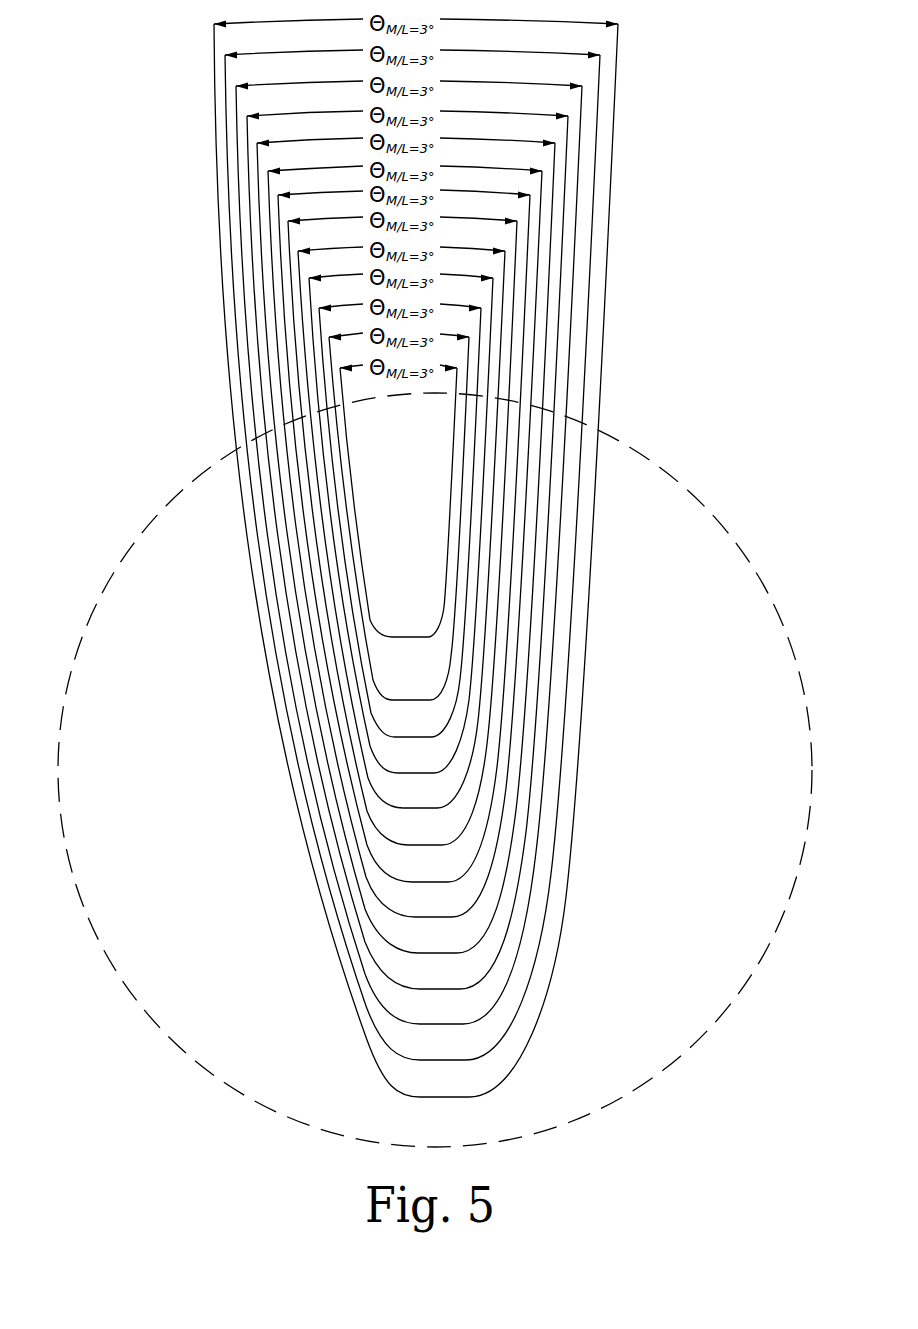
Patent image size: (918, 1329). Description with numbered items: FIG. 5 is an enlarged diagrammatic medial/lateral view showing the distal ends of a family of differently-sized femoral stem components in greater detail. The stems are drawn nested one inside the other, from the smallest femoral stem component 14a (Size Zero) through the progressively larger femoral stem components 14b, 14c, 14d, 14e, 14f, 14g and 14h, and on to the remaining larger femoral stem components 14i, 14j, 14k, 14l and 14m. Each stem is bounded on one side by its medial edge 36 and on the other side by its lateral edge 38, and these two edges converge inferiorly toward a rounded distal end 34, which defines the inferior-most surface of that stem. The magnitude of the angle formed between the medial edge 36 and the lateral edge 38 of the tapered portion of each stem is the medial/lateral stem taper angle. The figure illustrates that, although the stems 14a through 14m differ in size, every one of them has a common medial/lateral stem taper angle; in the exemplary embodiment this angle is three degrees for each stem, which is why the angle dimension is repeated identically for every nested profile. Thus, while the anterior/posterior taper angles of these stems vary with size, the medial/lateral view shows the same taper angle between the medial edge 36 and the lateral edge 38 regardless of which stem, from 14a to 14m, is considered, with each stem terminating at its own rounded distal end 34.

The smallest femoral stem component 14a is at (420, 612).
The femoral stem component 14b is at (418, 668).
The femoral stem component 14c is at (425, 716).
The femoral stem component 14d is at (432, 752).
The femoral stem component 14e is at (440, 788).
The femoral stem component 14f is at (448, 821).
The femoral stem component 14g is at (456, 854).
The femoral stem component 14h is at (464, 887).
The femoral stem component 14i is at (472, 922).
The femoral stem component 14j is at (487, 962).
The femoral stem component 14k is at (490, 996).
The femoral stem component 14l is at (494, 1030).
The femoral stem component 14m is at (497, 1068).
The rounded distal end 34 is at (390, 637).
The medial edge 36 is at (456, 408).
The lateral edge 38 is at (241, 492).